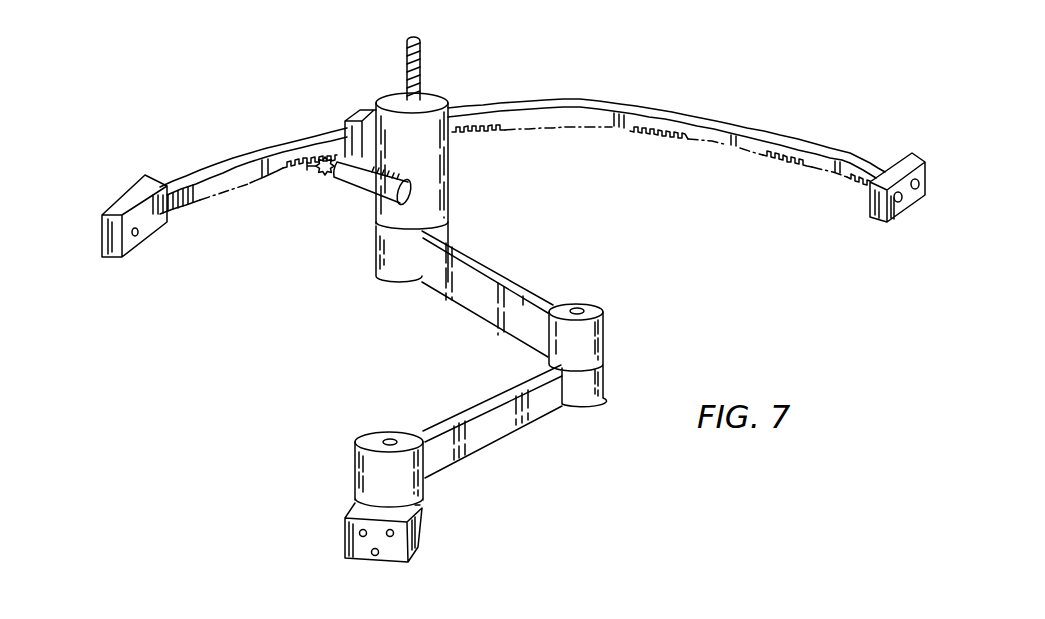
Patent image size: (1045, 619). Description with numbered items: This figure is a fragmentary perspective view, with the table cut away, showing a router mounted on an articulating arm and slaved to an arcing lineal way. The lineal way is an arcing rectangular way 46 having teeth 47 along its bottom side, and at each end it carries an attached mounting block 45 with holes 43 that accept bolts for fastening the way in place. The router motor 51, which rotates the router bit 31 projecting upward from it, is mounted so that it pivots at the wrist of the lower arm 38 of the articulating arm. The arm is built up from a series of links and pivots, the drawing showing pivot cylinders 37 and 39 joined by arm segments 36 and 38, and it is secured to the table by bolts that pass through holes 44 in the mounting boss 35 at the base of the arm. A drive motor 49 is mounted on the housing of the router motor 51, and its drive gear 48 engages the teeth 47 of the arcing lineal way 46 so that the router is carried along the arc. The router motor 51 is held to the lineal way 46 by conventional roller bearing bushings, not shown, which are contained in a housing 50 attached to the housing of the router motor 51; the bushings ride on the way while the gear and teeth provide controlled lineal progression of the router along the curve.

The router bit 31 is at (422, 67).
The mounting boss 35 is at (422, 528).
The lower arm 36 is at (480, 442).
The pivot cylinder 37 is at (385, 438).
The lower arm 38 is at (520, 284).
The intermediate pivot cylinder 39 is at (582, 305).
The holes 43 is at (157, 222).
The holes 44 is at (372, 550).
The mounting blocks 45 is at (153, 182).
The arcing rectangular way 46 is at (673, 112).
The teeth 47 is at (572, 132).
The drive gear 48 is at (310, 180).
The drive motor 49 is at (360, 190).
The housing 50 is at (360, 108).
The router motor 51 is at (437, 153).